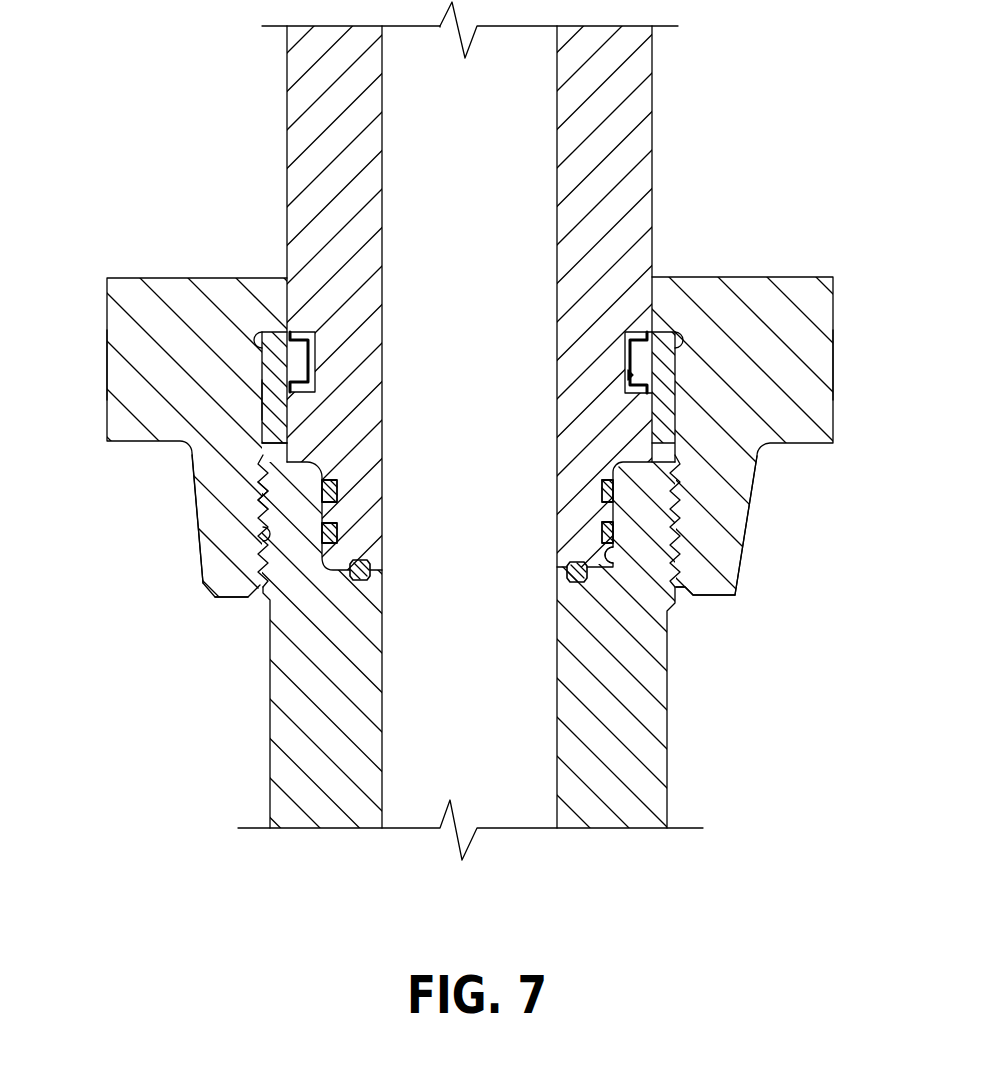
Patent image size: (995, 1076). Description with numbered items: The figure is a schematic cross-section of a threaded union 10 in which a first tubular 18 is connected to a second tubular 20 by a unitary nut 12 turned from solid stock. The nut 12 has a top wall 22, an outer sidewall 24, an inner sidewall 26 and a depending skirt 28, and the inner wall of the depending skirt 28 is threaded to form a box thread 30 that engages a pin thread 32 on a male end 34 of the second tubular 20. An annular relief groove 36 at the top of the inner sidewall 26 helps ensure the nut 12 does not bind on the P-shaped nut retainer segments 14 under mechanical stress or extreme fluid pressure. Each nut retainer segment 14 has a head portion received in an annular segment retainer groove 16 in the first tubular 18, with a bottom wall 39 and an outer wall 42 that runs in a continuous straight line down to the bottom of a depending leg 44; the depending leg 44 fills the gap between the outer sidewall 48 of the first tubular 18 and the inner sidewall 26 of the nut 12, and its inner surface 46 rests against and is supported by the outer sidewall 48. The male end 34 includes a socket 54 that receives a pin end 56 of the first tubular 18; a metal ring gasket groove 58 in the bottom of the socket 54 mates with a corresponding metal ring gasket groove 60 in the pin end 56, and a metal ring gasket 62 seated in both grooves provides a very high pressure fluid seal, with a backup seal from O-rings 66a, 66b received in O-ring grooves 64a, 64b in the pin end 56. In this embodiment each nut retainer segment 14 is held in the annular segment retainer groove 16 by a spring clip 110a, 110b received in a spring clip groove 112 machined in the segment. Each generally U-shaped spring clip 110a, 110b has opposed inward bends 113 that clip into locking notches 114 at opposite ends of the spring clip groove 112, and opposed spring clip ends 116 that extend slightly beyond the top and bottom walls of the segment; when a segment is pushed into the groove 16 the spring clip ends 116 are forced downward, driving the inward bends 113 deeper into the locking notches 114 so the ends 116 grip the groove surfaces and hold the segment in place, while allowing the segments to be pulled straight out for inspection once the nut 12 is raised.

The threaded union 10 is at (738, 214).
The unitary nut 12 is at (763, 277).
The nut retainer segment 14 is at (626, 375).
The annular segment retainer groove 16 is at (330, 357).
The first tubular 18 is at (636, 179).
The second tubular 20 is at (647, 682).
The top wall 22 is at (167, 278).
The outer sidewall 24 is at (107, 363).
The inner sidewall 26 is at (677, 395).
The depending skirt 28 is at (210, 475).
The box thread 30 is at (260, 502).
The pin thread 32 is at (262, 548).
The male end 34 is at (265, 600).
The annular relief groove 36 is at (256, 338).
The bottom wall 39 is at (700, 437).
The outer wall 42 is at (677, 371).
The depending leg 44 is at (275, 437).
The inner surface 46 is at (275, 405).
The outer sidewall 48 is at (277, 452).
The socket 54 is at (618, 547).
The pin end 56 is at (285, 585).
The metal ring gasket groove 58 is at (572, 580).
The metal ring gasket groove 60 is at (605, 555).
The metal ring gasket 62 is at (357, 580).
The O-ring groove 64a is at (602, 488).
The O-ring groove 64b is at (338, 532).
The O-ring 66a is at (338, 490).
The O-ring 66b is at (602, 530).
The spring clip 110a is at (305, 378).
The spring clip 110b is at (628, 366).
The spring clip groove 112 is at (628, 350).
The inward bend 113 is at (630, 336).
The locking notch 114 is at (305, 356).
The spring clip end 116 is at (287, 333).